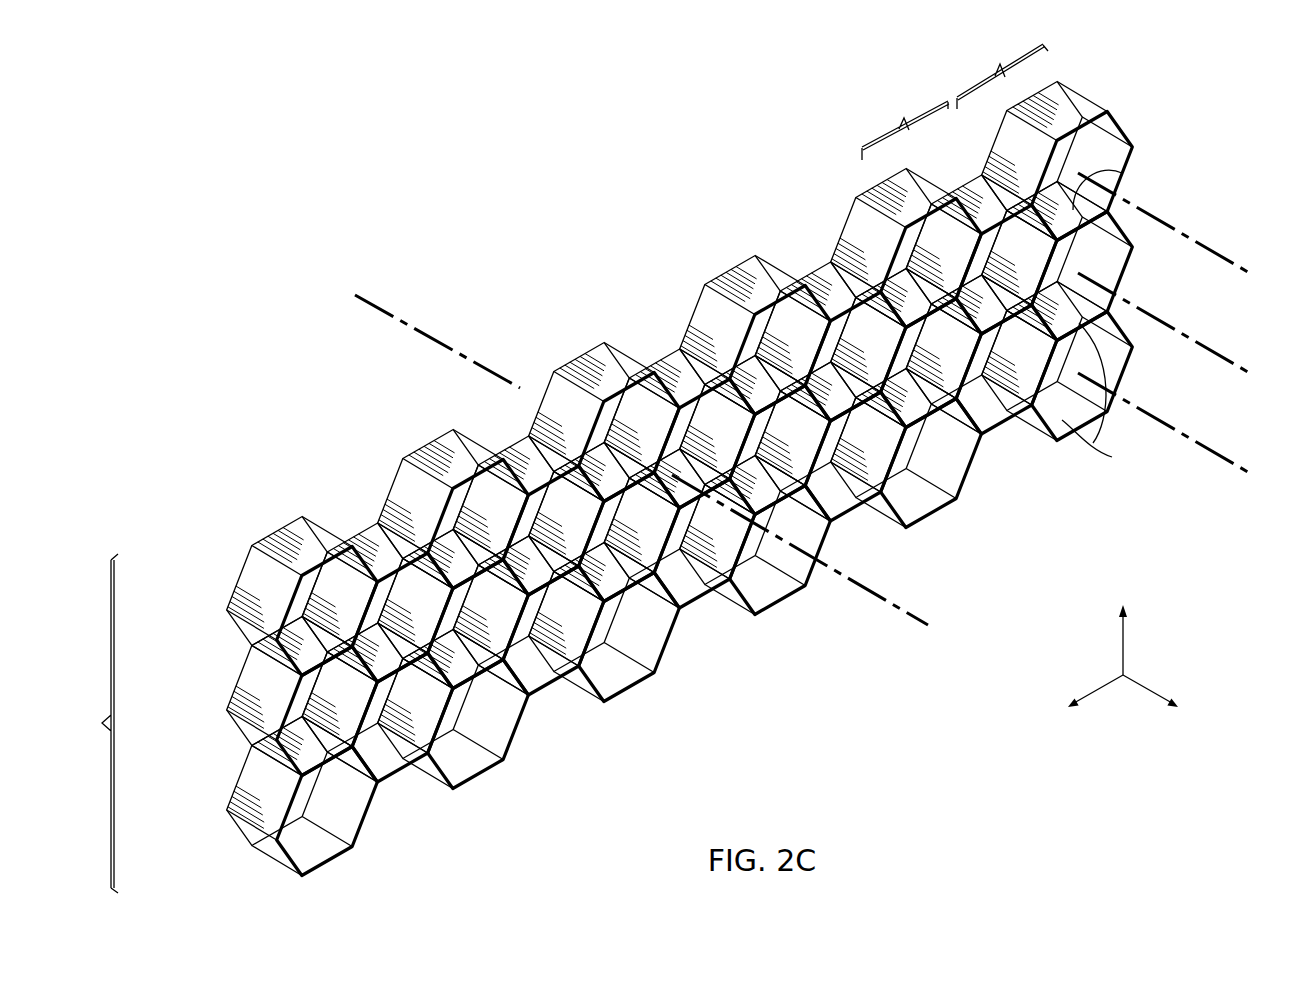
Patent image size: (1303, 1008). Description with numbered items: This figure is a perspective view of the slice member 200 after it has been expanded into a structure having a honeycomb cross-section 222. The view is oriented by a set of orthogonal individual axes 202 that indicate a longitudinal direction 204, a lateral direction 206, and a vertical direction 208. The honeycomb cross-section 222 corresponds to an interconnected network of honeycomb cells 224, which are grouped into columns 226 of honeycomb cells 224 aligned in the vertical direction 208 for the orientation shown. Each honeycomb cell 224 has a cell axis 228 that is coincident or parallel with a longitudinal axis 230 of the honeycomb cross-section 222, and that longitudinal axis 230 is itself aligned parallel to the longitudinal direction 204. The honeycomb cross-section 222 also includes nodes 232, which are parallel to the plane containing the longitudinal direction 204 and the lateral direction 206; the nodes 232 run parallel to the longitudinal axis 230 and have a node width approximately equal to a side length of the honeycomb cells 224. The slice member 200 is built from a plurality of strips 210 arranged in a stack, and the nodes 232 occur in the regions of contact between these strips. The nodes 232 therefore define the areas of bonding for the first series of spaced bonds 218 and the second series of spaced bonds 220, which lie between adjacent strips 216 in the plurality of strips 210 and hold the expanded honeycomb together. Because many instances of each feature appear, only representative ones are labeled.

The slice member 200 is at (675, 479).
The individual axes 202 is at (1138, 651).
The longitudinal direction 204 is at (1145, 685).
The lateral direction 206 is at (1102, 690).
The vertical direction 208 is at (1122, 637).
The plurality of strips 210 is at (87, 723).
The adjacent strips 216 is at (233, 588).
The first series of spaced bonds 218 is at (318, 643).
The second series of spaced bonds 220 is at (393, 547).
The honeycomb cross-section 222 is at (634, 300).
The honeycomb cells 224 is at (1107, 111).
The columns of honeycomb cells 226 is at (955, 95).
The cell axis 228 is at (1232, 258).
The longitudinal axis 230 is at (863, 592).
The nodes 232 is at (1122, 173).